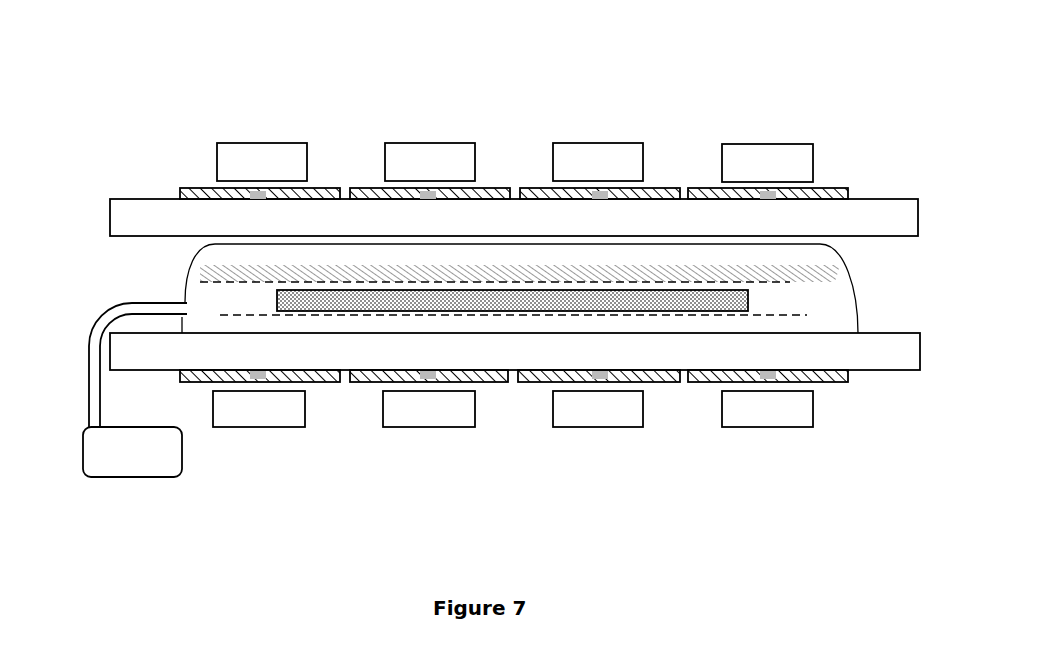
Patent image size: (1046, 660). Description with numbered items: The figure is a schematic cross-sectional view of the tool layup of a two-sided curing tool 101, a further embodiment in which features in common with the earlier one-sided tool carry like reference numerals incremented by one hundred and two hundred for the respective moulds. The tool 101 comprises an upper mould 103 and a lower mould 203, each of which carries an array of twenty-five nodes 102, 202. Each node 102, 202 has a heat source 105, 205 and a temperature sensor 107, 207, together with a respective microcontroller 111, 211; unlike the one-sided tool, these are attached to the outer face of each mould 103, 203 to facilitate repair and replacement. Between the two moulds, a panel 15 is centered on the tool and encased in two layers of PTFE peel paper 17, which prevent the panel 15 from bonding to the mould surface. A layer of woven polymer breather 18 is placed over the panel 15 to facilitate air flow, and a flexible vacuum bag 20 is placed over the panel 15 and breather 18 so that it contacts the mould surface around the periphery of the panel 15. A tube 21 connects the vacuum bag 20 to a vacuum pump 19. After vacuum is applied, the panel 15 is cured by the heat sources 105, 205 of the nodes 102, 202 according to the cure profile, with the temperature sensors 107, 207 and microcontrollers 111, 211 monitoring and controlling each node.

The curing tool 101 is at (168, 95).
The nodes 102 is at (688, 130).
The upper mould 103 is at (128, 197).
The heat source 105 is at (530, 188).
The temperature sensor 107 is at (590, 188).
The microcontroller 111 is at (430, 162).
The vacuum bag 20 is at (192, 268).
The woven polymer breather 18 is at (807, 268).
The PTFE peel paper 17 is at (790, 283).
The panel 15 is at (740, 300).
The tube 21 is at (130, 302).
The vacuum pump 19 is at (132, 452).
The lower mould 203 is at (129, 357).
The heat source 205 is at (540, 383).
The temperature sensor 207 is at (598, 383).
The microcontroller 211 is at (429, 409).
The nodes 202 is at (380, 445).